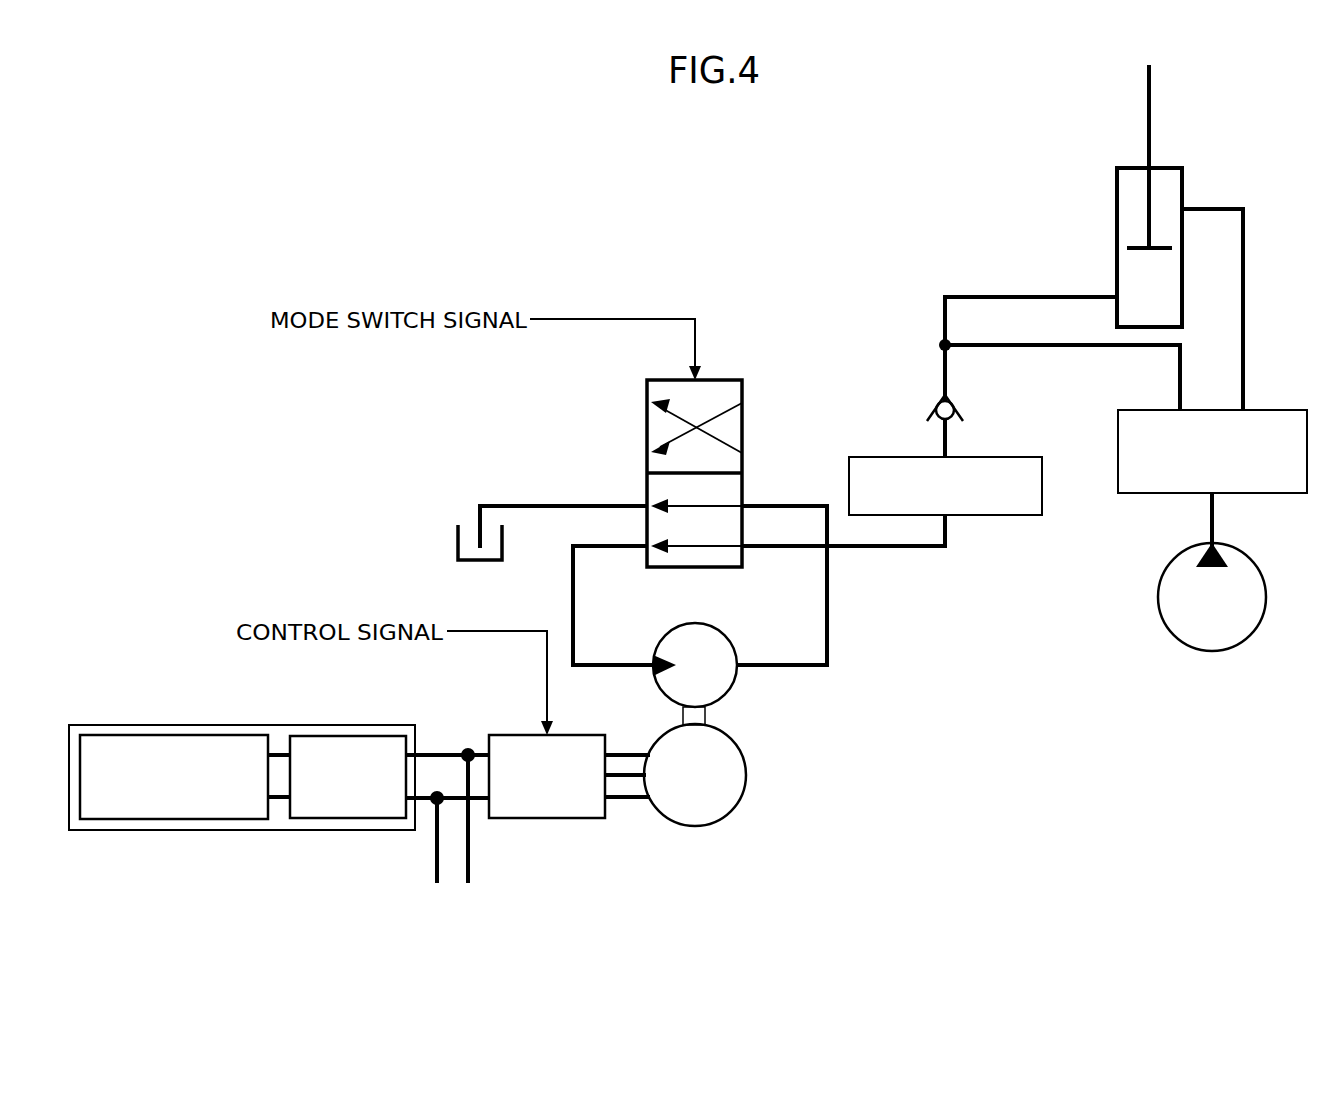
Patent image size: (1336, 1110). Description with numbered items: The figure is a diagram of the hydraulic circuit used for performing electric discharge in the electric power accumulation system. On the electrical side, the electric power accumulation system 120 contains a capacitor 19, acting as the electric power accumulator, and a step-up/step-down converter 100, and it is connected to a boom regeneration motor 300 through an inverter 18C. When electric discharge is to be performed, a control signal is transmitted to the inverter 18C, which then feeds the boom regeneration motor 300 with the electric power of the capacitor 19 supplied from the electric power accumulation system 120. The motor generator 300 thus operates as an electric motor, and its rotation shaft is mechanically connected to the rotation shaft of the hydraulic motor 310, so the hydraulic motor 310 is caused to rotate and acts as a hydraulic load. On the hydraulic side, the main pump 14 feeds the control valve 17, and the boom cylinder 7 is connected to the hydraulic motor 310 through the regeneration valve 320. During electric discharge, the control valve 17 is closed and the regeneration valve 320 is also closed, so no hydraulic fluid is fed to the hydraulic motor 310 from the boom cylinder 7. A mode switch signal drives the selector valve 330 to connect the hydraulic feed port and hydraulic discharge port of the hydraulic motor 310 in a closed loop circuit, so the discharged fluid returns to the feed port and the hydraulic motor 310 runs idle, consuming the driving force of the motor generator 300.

The boom cylinder 7 is at (1172, 168).
The main pump 14 is at (1266, 597).
The control valve 17 is at (1282, 410).
The capacitor 19 is at (110, 734).
The step-up/step-down converter 100 is at (345, 734).
The electric power accumulation system 120 is at (239, 724).
The inverter 18C is at (502, 734).
The boom regeneration motor 300 is at (746, 772).
The hydraulic motor 310 is at (727, 690).
The regeneration valve 320 is at (988, 457).
The selector valve 330 is at (725, 380).